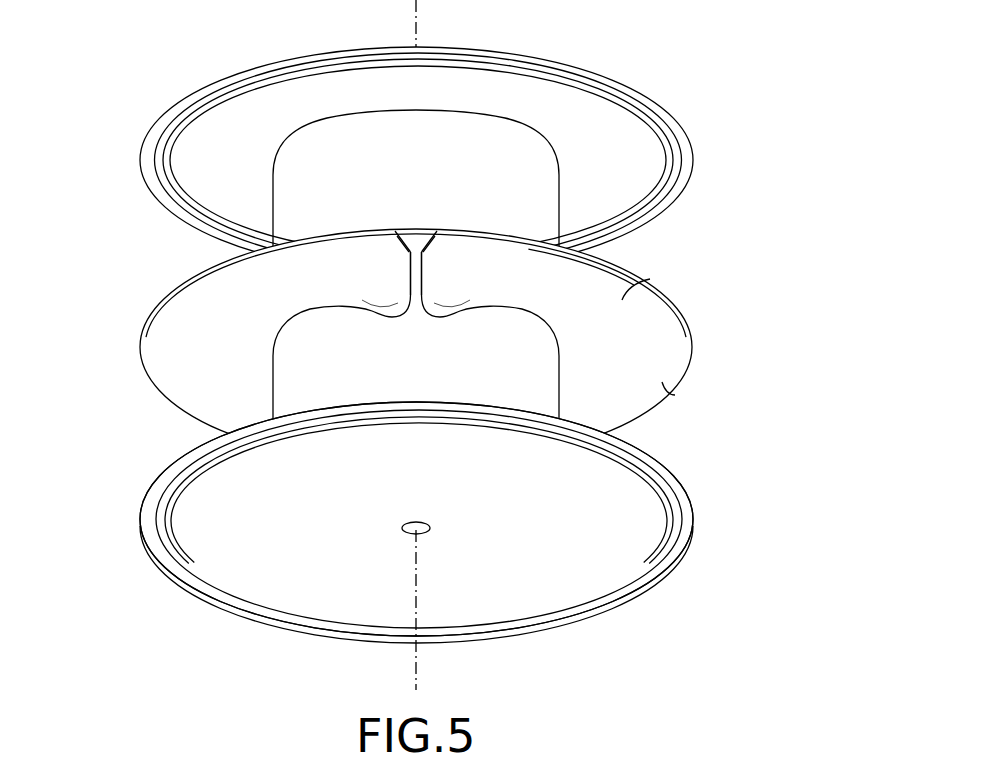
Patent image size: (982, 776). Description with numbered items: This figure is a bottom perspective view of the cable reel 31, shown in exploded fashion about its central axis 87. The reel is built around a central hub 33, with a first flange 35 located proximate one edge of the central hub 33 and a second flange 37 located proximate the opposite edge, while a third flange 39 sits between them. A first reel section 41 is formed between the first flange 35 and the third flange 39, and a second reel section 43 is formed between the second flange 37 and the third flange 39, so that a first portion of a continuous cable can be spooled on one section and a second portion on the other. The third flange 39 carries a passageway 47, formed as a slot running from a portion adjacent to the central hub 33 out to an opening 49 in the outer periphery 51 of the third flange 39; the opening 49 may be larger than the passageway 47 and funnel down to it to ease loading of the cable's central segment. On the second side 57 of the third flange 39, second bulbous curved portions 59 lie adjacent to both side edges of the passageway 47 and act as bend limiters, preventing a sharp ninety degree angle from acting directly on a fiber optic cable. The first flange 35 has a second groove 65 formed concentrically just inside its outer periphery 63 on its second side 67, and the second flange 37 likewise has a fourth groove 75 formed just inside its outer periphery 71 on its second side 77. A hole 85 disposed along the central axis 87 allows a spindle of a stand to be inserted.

The cable reel 31 is at (435, 345).
The central hub 33 is at (424, 160).
The first flange 35 is at (412, 160).
The second flange 37 is at (416, 545).
The third flange 39 is at (642, 283).
The first reel section 41 is at (460, 322).
The second reel section 43 is at (416, 545).
The passageway 47 is at (416, 268).
The opening 49 is at (402, 233).
The outer periphery 51 is at (693, 338).
The second side 57 is at (622, 355).
The second bulbous curved portions 59 is at (380, 318).
The outer periphery 63 is at (142, 164).
The second groove 65 is at (184, 129).
The second side 67 is at (293, 128).
The outer periphery 71 is at (141, 515).
The fourth groove 75 is at (165, 515).
The second side 77 is at (507, 495).
The hole 85 is at (402, 533).
The central axis 87 is at (420, 666).